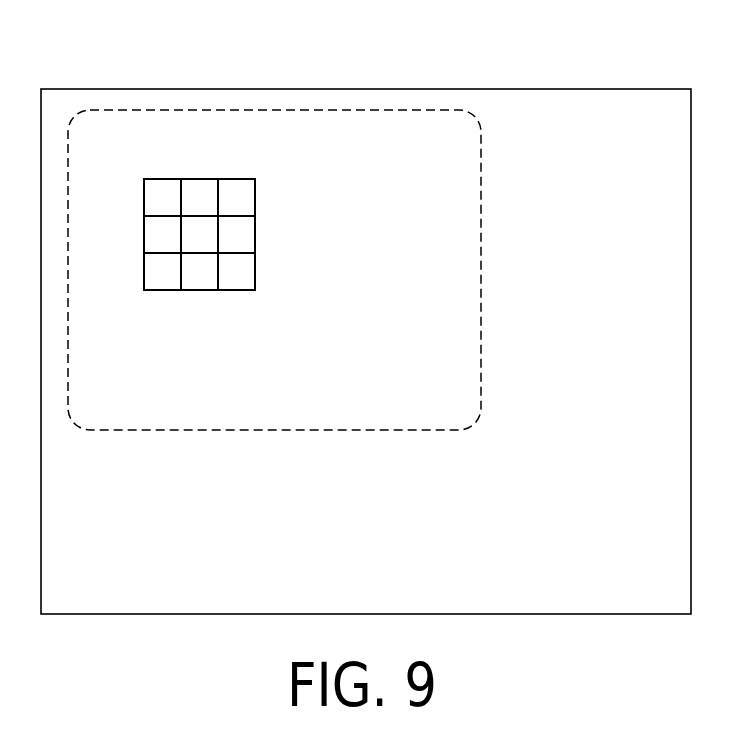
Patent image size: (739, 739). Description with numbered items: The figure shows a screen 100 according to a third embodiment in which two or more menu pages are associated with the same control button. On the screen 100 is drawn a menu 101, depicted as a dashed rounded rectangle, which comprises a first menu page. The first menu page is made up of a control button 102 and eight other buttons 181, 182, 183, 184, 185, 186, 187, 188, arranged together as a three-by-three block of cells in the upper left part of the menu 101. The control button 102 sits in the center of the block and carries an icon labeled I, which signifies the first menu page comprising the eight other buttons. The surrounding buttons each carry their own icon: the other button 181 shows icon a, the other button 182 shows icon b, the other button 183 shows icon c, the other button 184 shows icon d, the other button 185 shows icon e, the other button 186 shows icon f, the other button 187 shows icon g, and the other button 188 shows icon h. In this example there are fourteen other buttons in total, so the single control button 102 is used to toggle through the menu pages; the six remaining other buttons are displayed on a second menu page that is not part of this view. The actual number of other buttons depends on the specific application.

The screen 100 is at (570, 44).
The menu 101 is at (481, 247).
The control button 102 is at (210, 227).
The other button 181 is at (165, 178).
The other button 182 is at (203, 178).
The other button 183 is at (256, 197).
The other button 184 is at (256, 235).
The other button 185 is at (256, 273).
The other button 186 is at (200, 291).
The other button 187 is at (160, 291).
The other button 188 is at (144, 235).